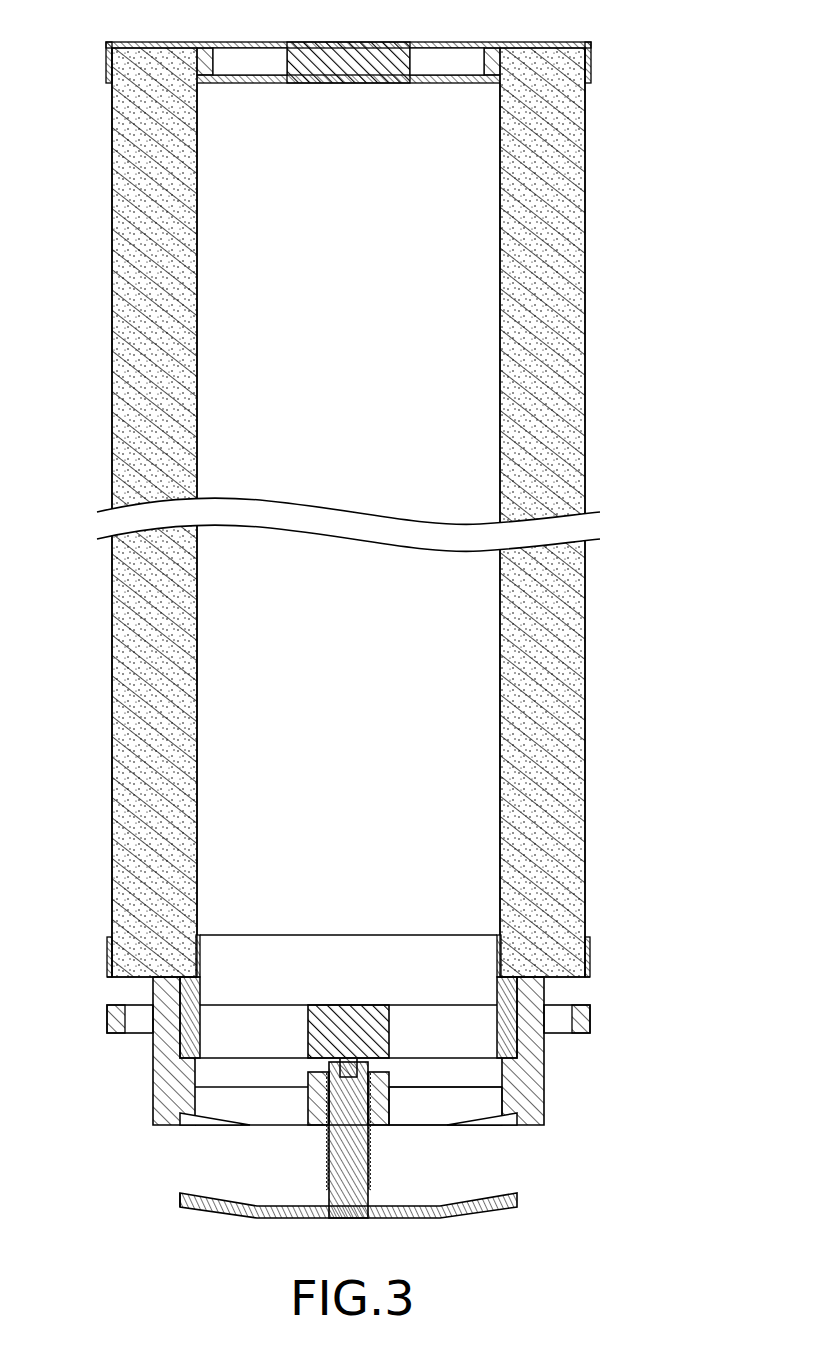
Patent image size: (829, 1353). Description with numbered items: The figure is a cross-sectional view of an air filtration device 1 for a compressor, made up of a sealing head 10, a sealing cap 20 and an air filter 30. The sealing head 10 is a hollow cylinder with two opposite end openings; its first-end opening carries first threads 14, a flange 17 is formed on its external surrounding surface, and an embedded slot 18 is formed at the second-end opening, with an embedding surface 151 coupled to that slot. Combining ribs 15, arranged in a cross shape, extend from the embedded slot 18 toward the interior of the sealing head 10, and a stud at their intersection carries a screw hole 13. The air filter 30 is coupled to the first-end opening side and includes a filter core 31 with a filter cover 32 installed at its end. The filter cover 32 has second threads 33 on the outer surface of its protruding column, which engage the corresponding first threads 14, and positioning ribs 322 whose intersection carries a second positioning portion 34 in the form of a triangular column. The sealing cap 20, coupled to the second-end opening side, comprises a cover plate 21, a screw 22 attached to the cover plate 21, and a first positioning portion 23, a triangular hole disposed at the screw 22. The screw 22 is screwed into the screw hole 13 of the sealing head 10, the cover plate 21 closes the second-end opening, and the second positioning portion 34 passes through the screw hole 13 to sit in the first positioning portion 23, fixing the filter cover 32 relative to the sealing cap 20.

The air filtration device 1 is at (356, 25).
The air filter 30 is at (396, 509).
The filter core 31 is at (568, 385).
The sealing head 10 is at (372, 1060).
The filter cover 32 is at (155, 1037).
The positioning ribs 322 is at (233, 1030).
The second threads 33 is at (437, 1010).
The first threads 14 is at (515, 1020).
The flange 17 is at (590, 1012).
The second positioning portion 34 is at (328, 1062).
The first positioning portion 23 is at (244, 1086).
The screw hole 13 is at (372, 1103).
The combining ribs 15 is at (442, 1107).
The embedding surface 151 is at (467, 1127).
The embedded slot 18 is at (194, 1120).
The sealing cap 20 is at (311, 1228).
The cover plate 21 is at (215, 1212).
The screw 22 is at (365, 1158).